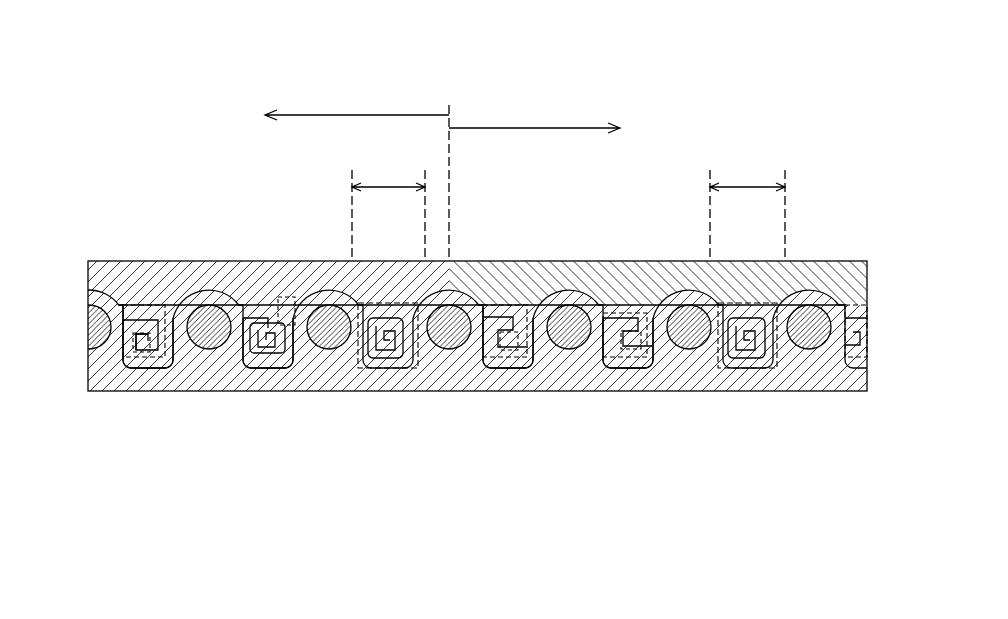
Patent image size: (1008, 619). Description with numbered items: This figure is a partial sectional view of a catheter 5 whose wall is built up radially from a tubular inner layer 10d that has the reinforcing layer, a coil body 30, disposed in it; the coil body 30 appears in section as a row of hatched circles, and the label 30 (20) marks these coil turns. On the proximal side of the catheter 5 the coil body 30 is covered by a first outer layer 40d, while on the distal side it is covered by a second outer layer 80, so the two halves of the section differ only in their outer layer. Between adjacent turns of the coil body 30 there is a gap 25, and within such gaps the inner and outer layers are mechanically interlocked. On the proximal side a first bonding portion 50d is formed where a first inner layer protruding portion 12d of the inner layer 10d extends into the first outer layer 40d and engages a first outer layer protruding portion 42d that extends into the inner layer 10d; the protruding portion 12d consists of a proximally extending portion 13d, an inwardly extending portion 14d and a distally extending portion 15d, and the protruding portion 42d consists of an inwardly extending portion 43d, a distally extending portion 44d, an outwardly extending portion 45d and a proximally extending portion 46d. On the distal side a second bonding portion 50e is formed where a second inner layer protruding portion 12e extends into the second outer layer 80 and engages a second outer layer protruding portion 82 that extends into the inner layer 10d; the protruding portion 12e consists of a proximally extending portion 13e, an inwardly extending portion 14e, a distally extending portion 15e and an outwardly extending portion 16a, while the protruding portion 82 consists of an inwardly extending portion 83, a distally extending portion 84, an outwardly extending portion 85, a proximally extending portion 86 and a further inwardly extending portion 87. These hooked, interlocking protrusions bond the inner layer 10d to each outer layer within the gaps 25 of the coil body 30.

The catheter 5 is at (500, 75).
The second outer layer 80 is at (92, 262).
The first outer layer 40d is at (838, 280).
The tubular inner layer 10d is at (832, 380).
The reinforcing layer (coil body) 30 is at (449, 390).
The optical waveguide core 20 is at (800, 347).
The gap 25 is at (568, 206).
The second inner layer protruding portion 12e is at (172, 333).
The proximally extending portion 13e is at (140, 312).
The inwardly extending portion 14e is at (156, 326).
The distally extending portion 15e is at (150, 348).
The outwardly extending portion 16a is at (130, 352).
The proximally extending portion 86 is at (249, 320).
The inwardly extending portion 87 is at (262, 330).
The inwardly extending portion 83 is at (290, 300).
The distally extending portion 84 is at (262, 370).
The outwardly extending portion 85 is at (246, 336).
The second outer layer protruding portion 82 is at (290, 366).
The second bonding portion 50e is at (388, 372).
The first inner layer protruding portion 12d is at (532, 327).
The proximally extending portion 13d is at (500, 312).
The inwardly extending portion 14d is at (525, 320).
The distally extending portion 15d is at (503, 348).
The proximally extending portion 46d is at (615, 322).
The inwardly extending portion 43d is at (649, 318).
The distally extending portion 44d is at (620, 370).
The outwardly extending portion 45d is at (600, 340).
The first outer layer protruding portion 42d is at (653, 370).
The first bonding portion 50d is at (718, 372).